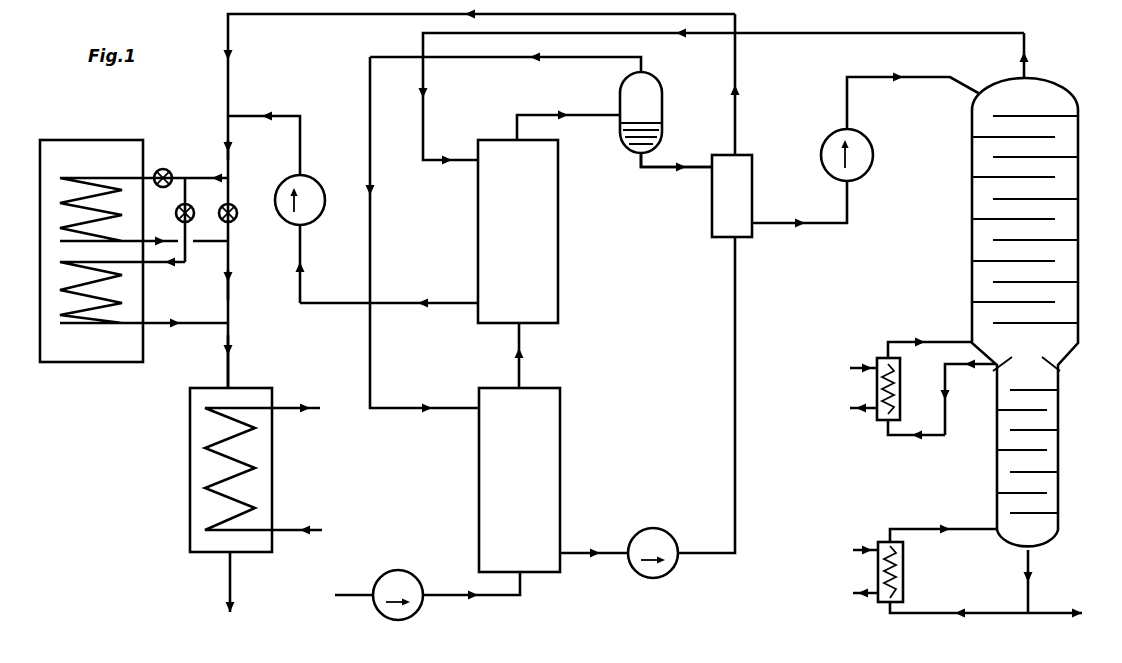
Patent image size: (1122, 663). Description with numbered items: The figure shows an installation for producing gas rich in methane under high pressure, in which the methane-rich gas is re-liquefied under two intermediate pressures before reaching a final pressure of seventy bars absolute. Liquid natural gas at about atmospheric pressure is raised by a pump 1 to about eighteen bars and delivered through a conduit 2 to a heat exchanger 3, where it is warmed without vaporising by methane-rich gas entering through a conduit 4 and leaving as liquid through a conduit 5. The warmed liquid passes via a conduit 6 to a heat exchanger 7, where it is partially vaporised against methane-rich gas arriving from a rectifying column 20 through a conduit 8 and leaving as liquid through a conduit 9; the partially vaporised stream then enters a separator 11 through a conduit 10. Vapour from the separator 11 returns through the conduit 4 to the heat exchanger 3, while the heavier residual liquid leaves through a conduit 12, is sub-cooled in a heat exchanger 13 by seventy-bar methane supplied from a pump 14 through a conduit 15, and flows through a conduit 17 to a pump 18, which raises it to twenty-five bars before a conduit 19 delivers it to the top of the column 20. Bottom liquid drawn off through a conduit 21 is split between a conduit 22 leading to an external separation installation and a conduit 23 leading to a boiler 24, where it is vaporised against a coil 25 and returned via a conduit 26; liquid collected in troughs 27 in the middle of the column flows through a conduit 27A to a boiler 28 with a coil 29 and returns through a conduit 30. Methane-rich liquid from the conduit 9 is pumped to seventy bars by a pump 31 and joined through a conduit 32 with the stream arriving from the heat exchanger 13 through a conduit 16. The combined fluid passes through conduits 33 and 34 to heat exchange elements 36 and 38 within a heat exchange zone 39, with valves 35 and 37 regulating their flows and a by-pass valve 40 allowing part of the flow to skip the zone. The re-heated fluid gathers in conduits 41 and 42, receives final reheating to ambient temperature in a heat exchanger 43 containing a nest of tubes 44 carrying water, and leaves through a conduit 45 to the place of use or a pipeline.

The pump 1 is at (382, 578).
The conduit 2 is at (500, 595).
The heat exchanger 3 is at (562, 468).
The conduit 4 is at (408, 408).
The conduit 5 is at (584, 553).
The conduit 6 is at (519, 350).
The heat exchanger 7 is at (558, 216).
The conduit 8 is at (425, 121).
The conduit 9 is at (405, 303).
The conduit 10 is at (549, 114).
The separator 11 is at (659, 108).
The conduit 12 is at (655, 167).
The heat exchanger 13 is at (712, 210).
The pump 14 is at (672, 570).
The conduit 15 is at (735, 350).
The conduit 16 is at (734, 99).
The conduit 17 is at (820, 224).
The pump 18 is at (858, 177).
The conduit 19 is at (915, 77).
The rectifying column 20 is at (972, 204).
The conduit 21 is at (1034, 586).
The conduit 22 is at (1052, 616).
The conduit 23 is at (940, 614).
The boiler 24 is at (904, 566).
The coil 25 is at (872, 573).
The conduit 26 is at (934, 528).
The troughs 27 is at (994, 366).
The conduit 27A is at (926, 435).
The boiler 28 is at (896, 392).
The coil 29 is at (872, 387).
The conduit 30 is at (908, 342).
The pump 31 is at (325, 189).
The conduit 32 is at (275, 116).
The conduit 33 is at (229, 155).
The conduit 34 is at (200, 178).
The valve 35 is at (165, 169).
The heat exchange element 36 is at (64, 194).
The valve 37 is at (194, 211).
The heat exchange element 38 is at (95, 323).
The heat exchange zone 39 is at (98, 362).
The valve 40 is at (237, 221).
The conduit 41 is at (233, 293).
The conduit 42 is at (230, 333).
The heat exchanger 43 is at (273, 476).
The nest of tubes 44 is at (252, 448).
The conduit 45 is at (230, 584).